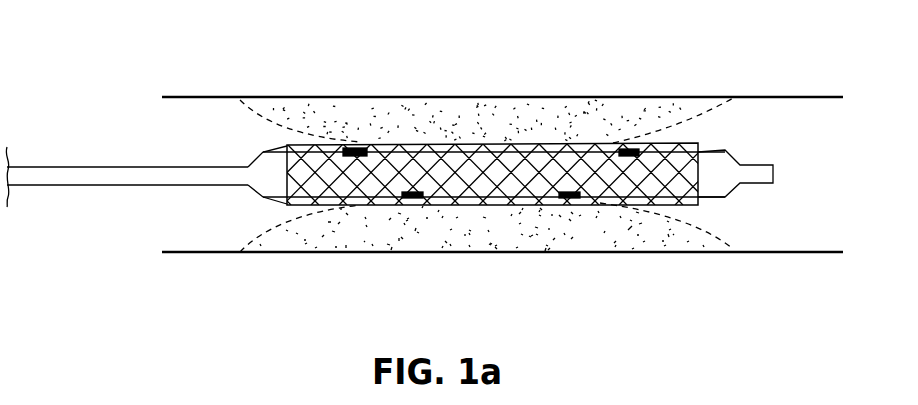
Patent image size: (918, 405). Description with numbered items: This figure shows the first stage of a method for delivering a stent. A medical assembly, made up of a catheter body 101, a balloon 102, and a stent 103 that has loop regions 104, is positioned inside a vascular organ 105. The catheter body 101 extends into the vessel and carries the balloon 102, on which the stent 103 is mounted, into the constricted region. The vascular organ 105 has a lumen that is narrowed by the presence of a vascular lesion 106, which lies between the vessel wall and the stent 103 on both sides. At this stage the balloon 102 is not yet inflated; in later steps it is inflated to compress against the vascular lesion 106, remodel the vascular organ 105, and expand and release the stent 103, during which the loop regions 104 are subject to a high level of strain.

The catheter body 101 is at (80, 186).
The balloon 102 is at (737, 152).
The stent 103 is at (290, 168).
The loop regions 104 is at (360, 147).
The vascular organ 105 is at (205, 97).
The vascular lesion 106 is at (688, 112).